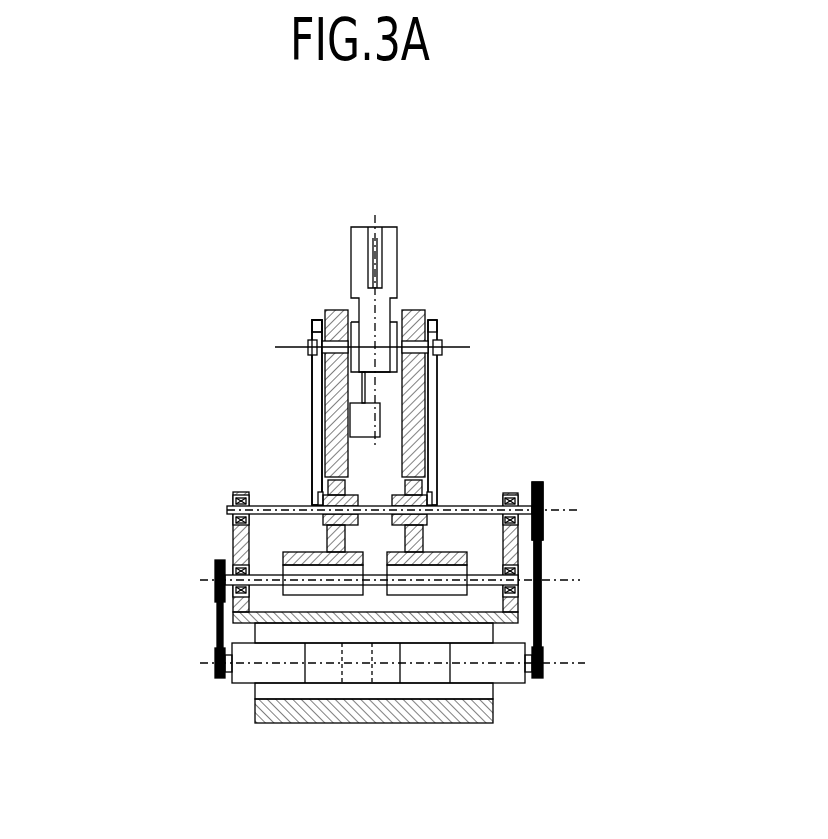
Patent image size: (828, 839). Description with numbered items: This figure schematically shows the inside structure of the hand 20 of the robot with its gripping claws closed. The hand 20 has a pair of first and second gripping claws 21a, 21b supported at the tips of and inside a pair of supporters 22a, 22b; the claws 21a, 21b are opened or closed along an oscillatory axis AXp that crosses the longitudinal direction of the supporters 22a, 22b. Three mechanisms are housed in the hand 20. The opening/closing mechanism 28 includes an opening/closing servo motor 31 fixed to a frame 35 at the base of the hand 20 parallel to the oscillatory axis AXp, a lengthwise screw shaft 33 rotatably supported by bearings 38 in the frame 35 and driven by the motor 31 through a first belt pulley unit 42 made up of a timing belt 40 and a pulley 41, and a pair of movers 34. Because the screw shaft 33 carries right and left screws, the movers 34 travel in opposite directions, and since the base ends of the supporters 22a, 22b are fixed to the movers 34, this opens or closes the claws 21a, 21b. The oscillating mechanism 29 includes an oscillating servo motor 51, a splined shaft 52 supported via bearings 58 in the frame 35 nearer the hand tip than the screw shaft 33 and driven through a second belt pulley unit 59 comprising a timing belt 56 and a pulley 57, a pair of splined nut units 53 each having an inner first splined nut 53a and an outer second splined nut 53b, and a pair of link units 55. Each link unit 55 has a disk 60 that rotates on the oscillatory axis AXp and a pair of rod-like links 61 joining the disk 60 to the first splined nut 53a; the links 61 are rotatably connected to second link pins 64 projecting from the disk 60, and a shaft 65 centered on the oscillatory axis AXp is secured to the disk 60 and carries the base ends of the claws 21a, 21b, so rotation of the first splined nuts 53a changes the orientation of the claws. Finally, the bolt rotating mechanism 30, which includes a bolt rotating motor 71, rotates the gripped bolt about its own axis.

The hand 20 is at (150, 193).
The first gripping claw 21a is at (360, 243).
The second gripping claw 21b is at (388, 243).
The supporter 22a is at (340, 310).
The supporter 22b is at (415, 310).
The opening/closing mechanism 28 is at (187, 643).
The oscillating mechanism 29 is at (669, 520).
The bolt rotating mechanism 30 is at (374, 442).
The opening/closing servo motor 31 is at (265, 722).
The lengthwise screw shaft 33 is at (381, 587).
The mover 34 is at (350, 596).
The frame 35 is at (232, 530).
The bearing 38 is at (232, 565).
The timing belt 40 is at (218, 622).
The pulley 41 is at (217, 575).
The first belt pulley unit 42 is at (207, 597).
The oscillating servo motor 51 is at (470, 620).
The splined shaft 52 is at (493, 506).
The splined nut unit 53 is at (352, 485).
The first splined nut 53a is at (323, 497).
The second splined nut 53b is at (317, 493).
The link unit 55 is at (292, 403).
The timing belt 56 is at (541, 623).
The pulley 57 is at (542, 484).
The bearing 58 is at (230, 502).
The second belt pulley unit 59 is at (551, 545).
The disk 60 is at (313, 325).
The link 61 is at (313, 392).
The second link pin 64 is at (308, 345).
The shaft 65 is at (315, 312).
The bolt rotating motor 71 is at (386, 398).
The oscillatory axis AXp is at (399, 347).